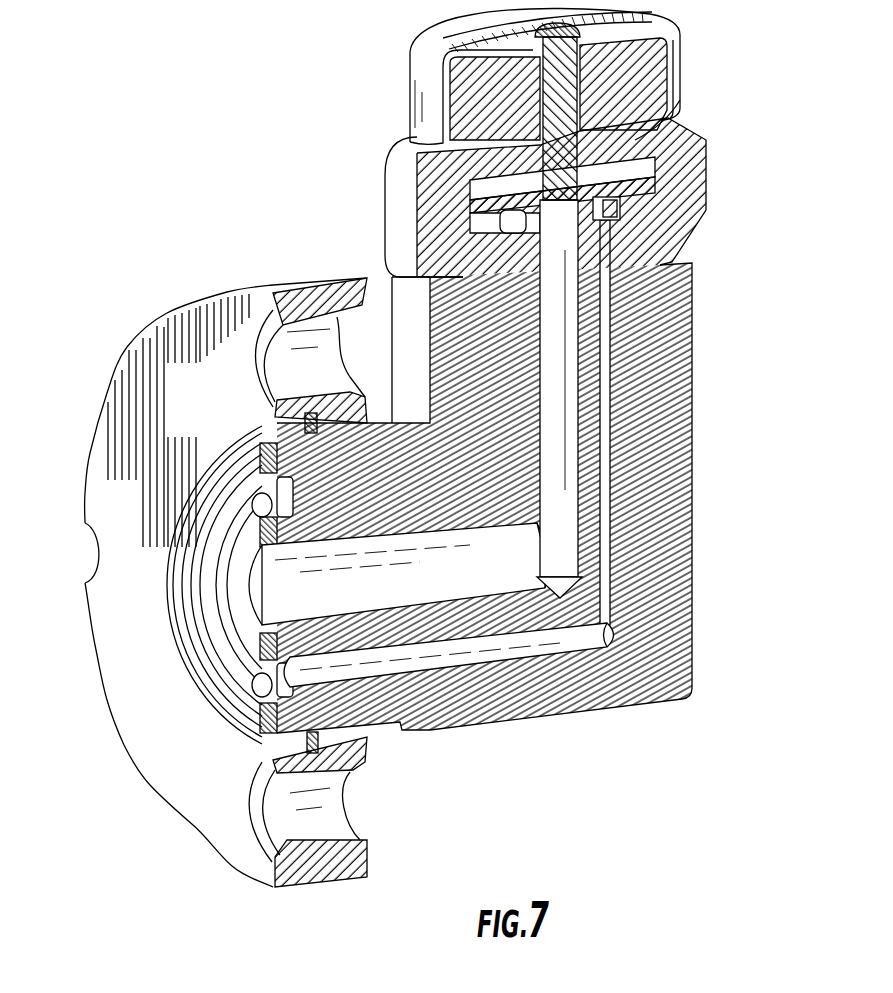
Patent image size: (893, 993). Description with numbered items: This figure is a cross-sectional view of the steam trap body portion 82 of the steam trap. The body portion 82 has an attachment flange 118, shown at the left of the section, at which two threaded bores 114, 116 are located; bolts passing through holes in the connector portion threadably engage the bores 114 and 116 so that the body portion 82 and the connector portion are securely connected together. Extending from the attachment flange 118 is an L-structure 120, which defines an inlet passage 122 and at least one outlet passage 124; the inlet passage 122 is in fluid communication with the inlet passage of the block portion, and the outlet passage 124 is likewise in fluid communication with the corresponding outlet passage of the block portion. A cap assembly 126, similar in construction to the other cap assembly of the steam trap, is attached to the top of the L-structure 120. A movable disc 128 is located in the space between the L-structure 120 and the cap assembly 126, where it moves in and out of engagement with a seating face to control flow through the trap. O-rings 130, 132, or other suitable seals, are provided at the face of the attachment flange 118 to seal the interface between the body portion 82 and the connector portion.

The body portion 82 is at (333, 147).
The bore 114 is at (277, 370).
The bore 116 is at (287, 833).
The attachment flange 118 is at (130, 673).
The L-structure 120 is at (654, 700).
The inlet passage 122 is at (463, 578).
The outlet passage 124 is at (553, 643).
The cap assembly 126 is at (723, 200).
The movable disc 128 is at (678, 92).
The O-ring 130 is at (250, 632).
The O-ring 132 is at (193, 510).